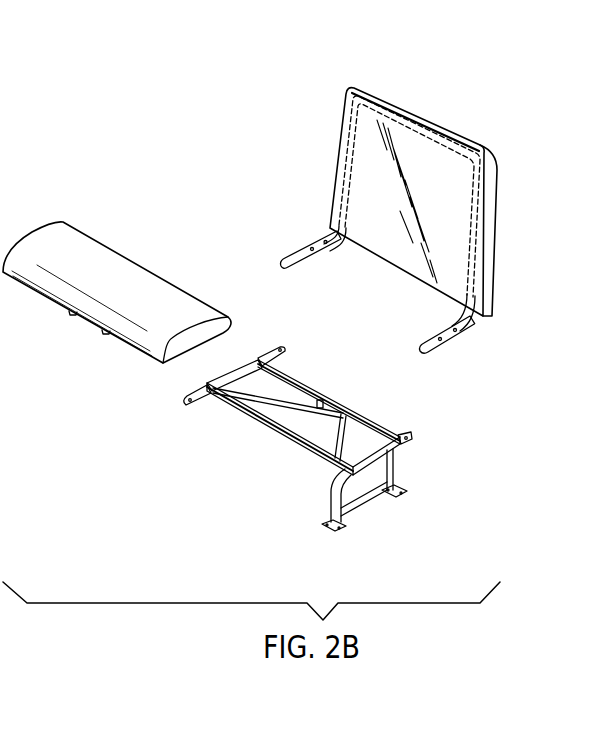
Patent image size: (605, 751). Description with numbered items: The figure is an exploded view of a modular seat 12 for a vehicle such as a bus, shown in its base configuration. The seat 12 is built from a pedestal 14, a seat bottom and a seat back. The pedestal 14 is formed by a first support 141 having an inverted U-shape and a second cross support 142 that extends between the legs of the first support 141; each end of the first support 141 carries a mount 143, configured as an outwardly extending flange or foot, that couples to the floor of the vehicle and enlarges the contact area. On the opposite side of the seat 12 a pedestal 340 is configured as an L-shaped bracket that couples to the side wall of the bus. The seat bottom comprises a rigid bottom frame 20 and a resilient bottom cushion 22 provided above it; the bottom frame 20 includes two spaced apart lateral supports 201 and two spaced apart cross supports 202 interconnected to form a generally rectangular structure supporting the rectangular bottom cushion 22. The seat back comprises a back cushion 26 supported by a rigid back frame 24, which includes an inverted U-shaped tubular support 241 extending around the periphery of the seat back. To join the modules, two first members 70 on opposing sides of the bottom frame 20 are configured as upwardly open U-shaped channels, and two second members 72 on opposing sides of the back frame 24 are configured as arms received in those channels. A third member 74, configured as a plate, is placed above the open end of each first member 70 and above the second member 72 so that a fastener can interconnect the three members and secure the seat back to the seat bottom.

The seat 12 is at (369, 52).
The bottom cushion 22 is at (62, 232).
The back cushion 26 is at (338, 114).
The back frame 24 is at (333, 155).
The inverted U-shaped support 241 is at (372, 117).
The second member 72 is at (323, 226).
The third member 74 is at (290, 250).
The first member 70 is at (254, 366).
The pedestal 340 is at (193, 388).
The bottom frame 20 is at (275, 420).
The lateral support 201 is at (258, 405).
The cross support 202 is at (262, 407).
The pedestal 14 is at (363, 498).
The first support 141 is at (331, 497).
The second cross support 142 is at (357, 503).
The mount 143 is at (323, 521).